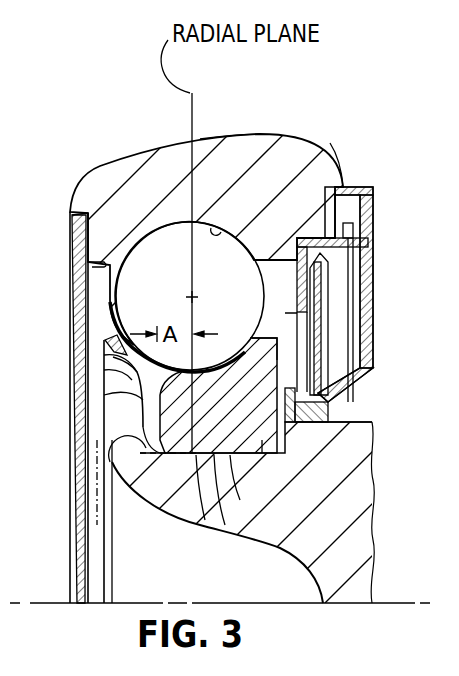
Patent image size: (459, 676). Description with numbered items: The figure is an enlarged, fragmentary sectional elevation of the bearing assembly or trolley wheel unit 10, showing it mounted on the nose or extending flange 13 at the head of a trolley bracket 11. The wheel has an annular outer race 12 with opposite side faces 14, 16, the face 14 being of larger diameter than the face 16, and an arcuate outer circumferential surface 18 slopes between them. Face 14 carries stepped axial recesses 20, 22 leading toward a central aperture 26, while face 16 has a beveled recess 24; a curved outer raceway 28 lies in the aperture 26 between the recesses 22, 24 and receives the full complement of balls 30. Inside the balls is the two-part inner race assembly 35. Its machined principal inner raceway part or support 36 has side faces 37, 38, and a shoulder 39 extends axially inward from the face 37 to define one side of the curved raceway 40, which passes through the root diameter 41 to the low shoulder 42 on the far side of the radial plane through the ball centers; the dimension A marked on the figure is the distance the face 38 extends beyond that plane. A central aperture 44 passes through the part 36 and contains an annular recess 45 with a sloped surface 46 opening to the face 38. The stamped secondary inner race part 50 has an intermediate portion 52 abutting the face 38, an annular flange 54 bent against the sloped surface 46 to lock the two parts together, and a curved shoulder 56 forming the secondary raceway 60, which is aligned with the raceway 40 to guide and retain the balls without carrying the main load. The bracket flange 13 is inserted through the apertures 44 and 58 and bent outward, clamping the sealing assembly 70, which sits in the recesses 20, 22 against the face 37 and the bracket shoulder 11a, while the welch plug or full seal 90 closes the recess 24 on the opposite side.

The bearing assembly or trolley wheel unit 10 is at (106, 98).
The trolley bracket 11 is at (358, 494).
The abutting shoulder 11a is at (328, 450).
The outer race 12 is at (310, 135).
The nose or extending flange 13 is at (180, 497).
The side surface or face 14 is at (345, 167).
The side surface or face 16 is at (70, 211).
The arcuate outer circumferential surface 18 is at (213, 134).
The axial recess 20 is at (340, 200).
The axial recess 22 is at (305, 247).
The recess 24 is at (80, 224).
The central opening or aperture 26 is at (95, 263).
The curved outer raceway 28 is at (226, 231).
The balls 30 is at (143, 275).
The inner race assembly 35 is at (104, 418).
The principal inner raceway part or support 36 is at (286, 420).
The side face 37 is at (312, 340).
The side face 38 is at (180, 404).
The shoulder 39 is at (268, 338).
The curved or arcuate raceway 40 is at (247, 356).
The minimum or root diameter 41 is at (122, 342).
The low shoulder 42 is at (138, 354).
The central aperture 44 is at (263, 442).
The annular recess 45 is at (238, 463).
The radially inwardly sloped annular surface 46 is at (203, 470).
The secondary inner race part 50 is at (136, 449).
The radially extending intermediate portion 52 is at (140, 390).
The annular inwardly extending flange 54 is at (217, 470).
The curved outwardly angled shoulder 56 is at (128, 367).
The central aperture 58 is at (165, 478).
The secondary raceway portion 60 is at (110, 307).
The sealing assembly 70 is at (397, 326).
The welch plug or full seal 90 is at (70, 509).